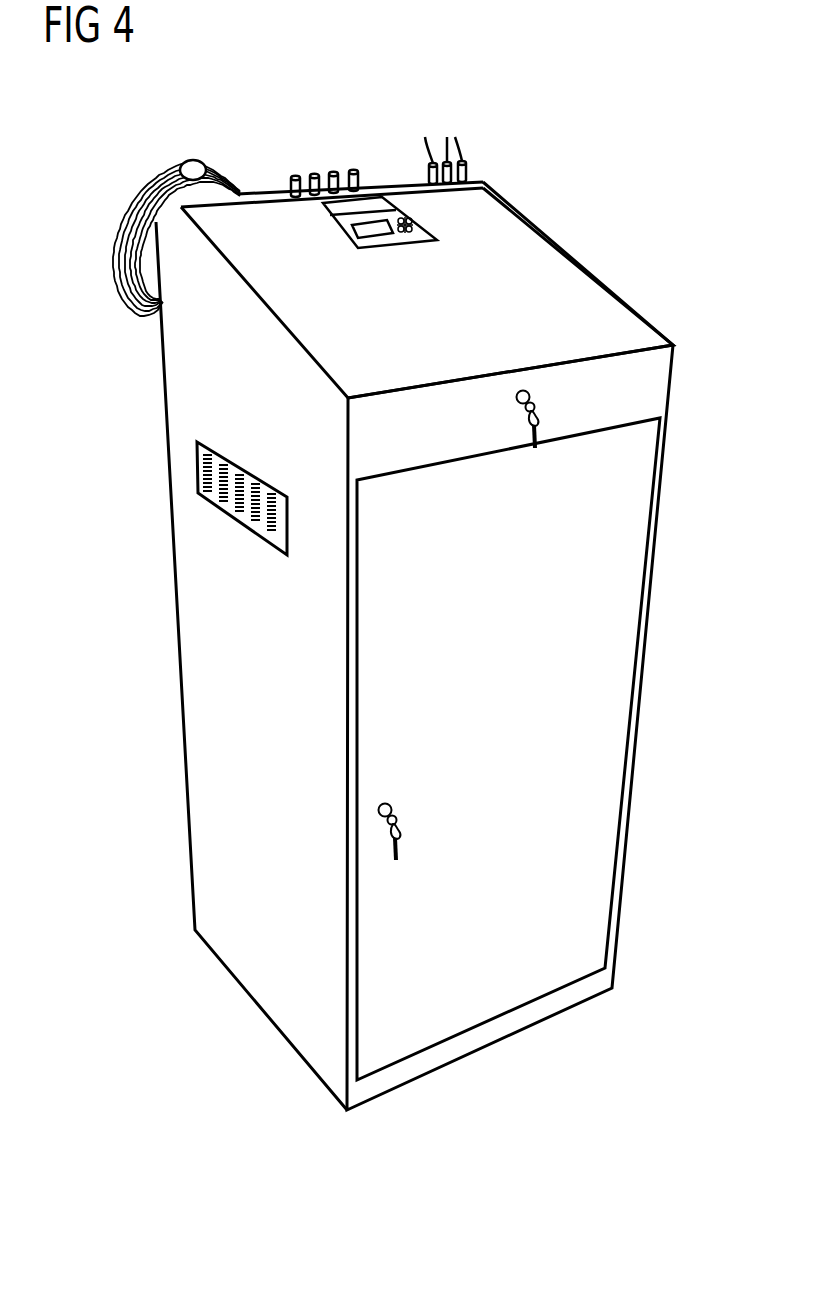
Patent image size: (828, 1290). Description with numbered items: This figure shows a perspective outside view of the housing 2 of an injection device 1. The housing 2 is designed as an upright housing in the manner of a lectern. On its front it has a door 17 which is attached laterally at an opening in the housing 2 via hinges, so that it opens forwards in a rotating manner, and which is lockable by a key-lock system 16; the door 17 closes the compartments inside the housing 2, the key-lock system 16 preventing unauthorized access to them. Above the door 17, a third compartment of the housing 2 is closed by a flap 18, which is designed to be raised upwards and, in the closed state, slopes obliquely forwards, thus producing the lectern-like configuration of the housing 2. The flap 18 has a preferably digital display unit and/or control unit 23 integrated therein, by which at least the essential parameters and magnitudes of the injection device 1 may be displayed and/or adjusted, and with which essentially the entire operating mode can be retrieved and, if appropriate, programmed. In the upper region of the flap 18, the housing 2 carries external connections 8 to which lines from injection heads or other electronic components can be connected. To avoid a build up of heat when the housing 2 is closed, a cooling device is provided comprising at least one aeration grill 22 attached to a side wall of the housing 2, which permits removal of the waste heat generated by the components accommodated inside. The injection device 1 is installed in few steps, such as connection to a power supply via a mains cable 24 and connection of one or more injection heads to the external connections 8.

The injection device 1 is at (557, 140).
The housing 2 is at (187, 380).
The external connections 8 is at (338, 160).
The key-lock system 16 is at (400, 830).
The door 17 is at (630, 560).
The flap 18 is at (598, 302).
The aeration grill 22 is at (197, 470).
The display unit and/or control unit 23 is at (417, 220).
The mains cable 24 is at (137, 220).